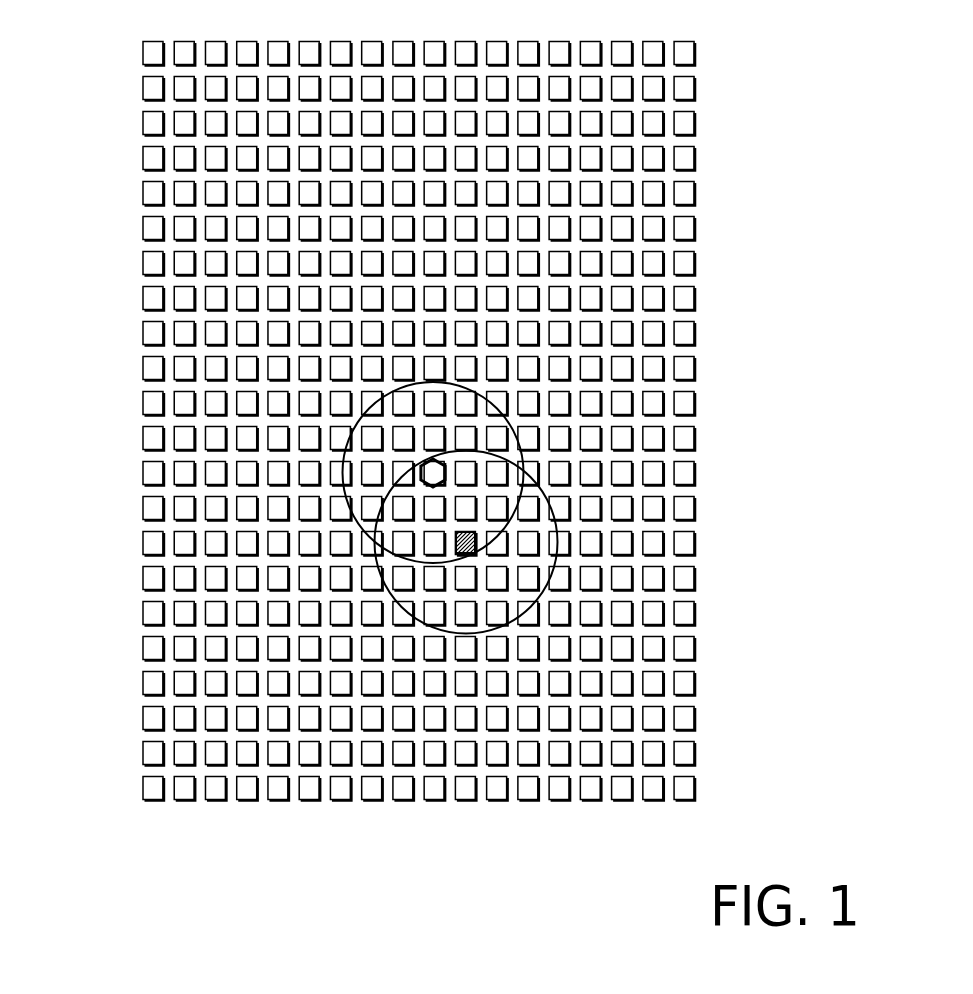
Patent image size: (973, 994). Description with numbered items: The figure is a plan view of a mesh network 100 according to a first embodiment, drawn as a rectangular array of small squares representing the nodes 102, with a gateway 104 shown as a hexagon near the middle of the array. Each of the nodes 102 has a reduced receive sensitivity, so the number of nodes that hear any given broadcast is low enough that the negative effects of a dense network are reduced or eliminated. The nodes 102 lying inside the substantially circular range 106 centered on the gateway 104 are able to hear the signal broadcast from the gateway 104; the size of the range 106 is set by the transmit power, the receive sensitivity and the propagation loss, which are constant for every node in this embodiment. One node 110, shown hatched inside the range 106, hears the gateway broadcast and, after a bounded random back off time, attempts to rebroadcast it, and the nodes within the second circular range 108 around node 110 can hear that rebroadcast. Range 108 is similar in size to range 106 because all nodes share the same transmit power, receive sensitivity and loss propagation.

The mesh network 100 is at (760, 196).
The nodes 102 is at (693, 89).
The gateway 104 is at (447, 473).
The range 106 is at (510, 418).
The range 108 is at (557, 527).
The node 110 is at (475, 541).